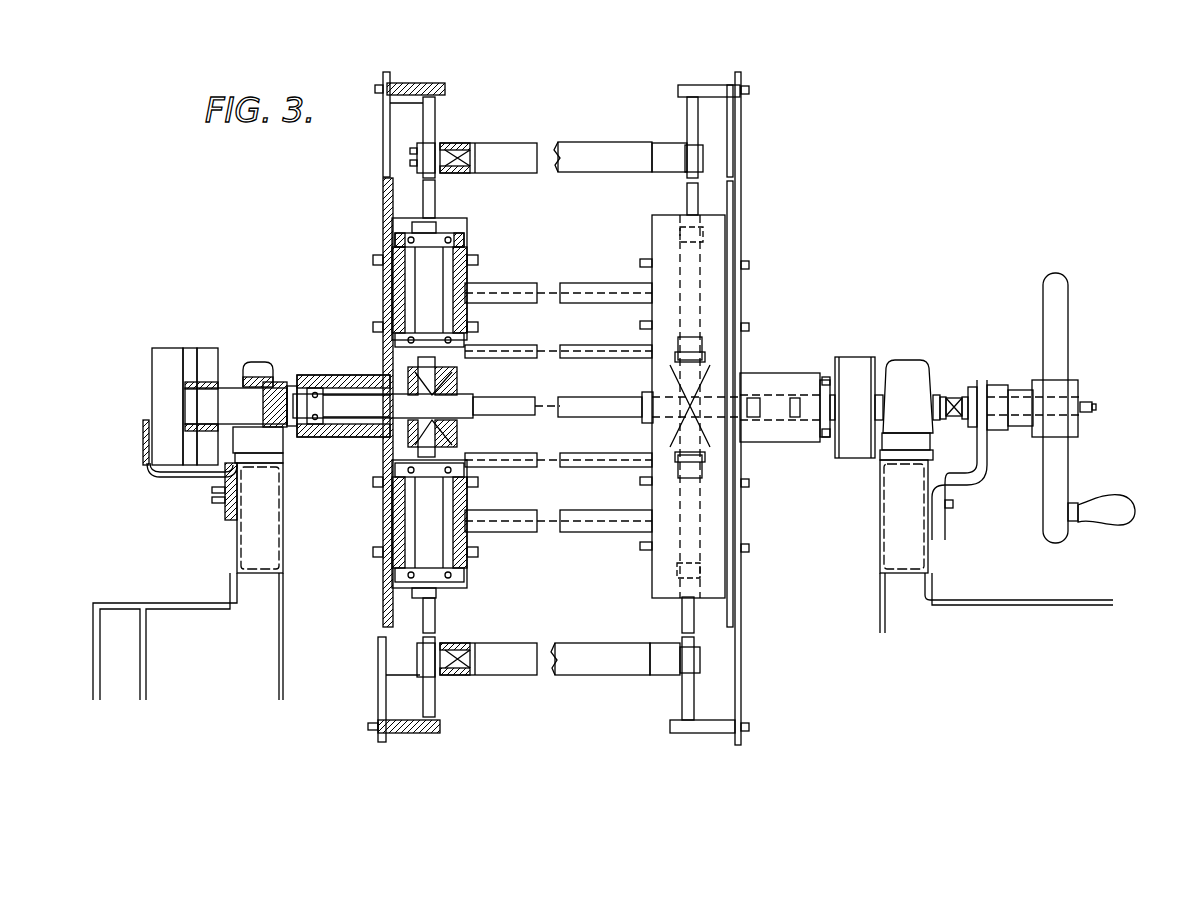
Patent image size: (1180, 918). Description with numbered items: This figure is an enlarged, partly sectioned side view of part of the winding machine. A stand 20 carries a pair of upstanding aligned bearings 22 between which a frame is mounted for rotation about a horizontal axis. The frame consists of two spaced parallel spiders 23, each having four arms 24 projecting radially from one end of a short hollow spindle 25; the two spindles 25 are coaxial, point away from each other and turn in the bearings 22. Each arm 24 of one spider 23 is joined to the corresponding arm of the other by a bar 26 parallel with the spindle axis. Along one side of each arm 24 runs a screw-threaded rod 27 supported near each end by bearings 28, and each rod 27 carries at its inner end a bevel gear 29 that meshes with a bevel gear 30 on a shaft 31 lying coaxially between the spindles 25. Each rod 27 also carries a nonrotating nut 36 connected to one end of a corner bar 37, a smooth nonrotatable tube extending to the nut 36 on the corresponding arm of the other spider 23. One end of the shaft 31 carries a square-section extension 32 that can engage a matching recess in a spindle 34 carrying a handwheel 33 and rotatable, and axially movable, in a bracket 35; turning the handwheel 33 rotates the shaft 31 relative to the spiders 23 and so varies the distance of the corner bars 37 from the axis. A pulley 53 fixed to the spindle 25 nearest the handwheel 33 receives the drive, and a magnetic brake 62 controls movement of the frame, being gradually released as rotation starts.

The stand 20 is at (93, 605).
The bearing 22 is at (255, 362).
The spider 23 is at (720, 300).
The arm 24 is at (740, 136).
The spindle 25 is at (340, 375).
The bar 26 is at (600, 283).
The screw-threaded rod 27 is at (436, 196).
The bearing 28 is at (432, 98).
The bevel gear 29 is at (445, 383).
The bevel gear 30 is at (472, 383).
The shaft 31 is at (624, 385).
The extension 32 is at (958, 398).
The handwheel 33 is at (1058, 343).
The spindle 34 is at (1018, 392).
The bracket 35 is at (982, 480).
The nut 36 is at (433, 150).
The corner bar 37 is at (582, 120).
The pulley 53 is at (880, 330).
The magnetic brake 62 is at (178, 362).